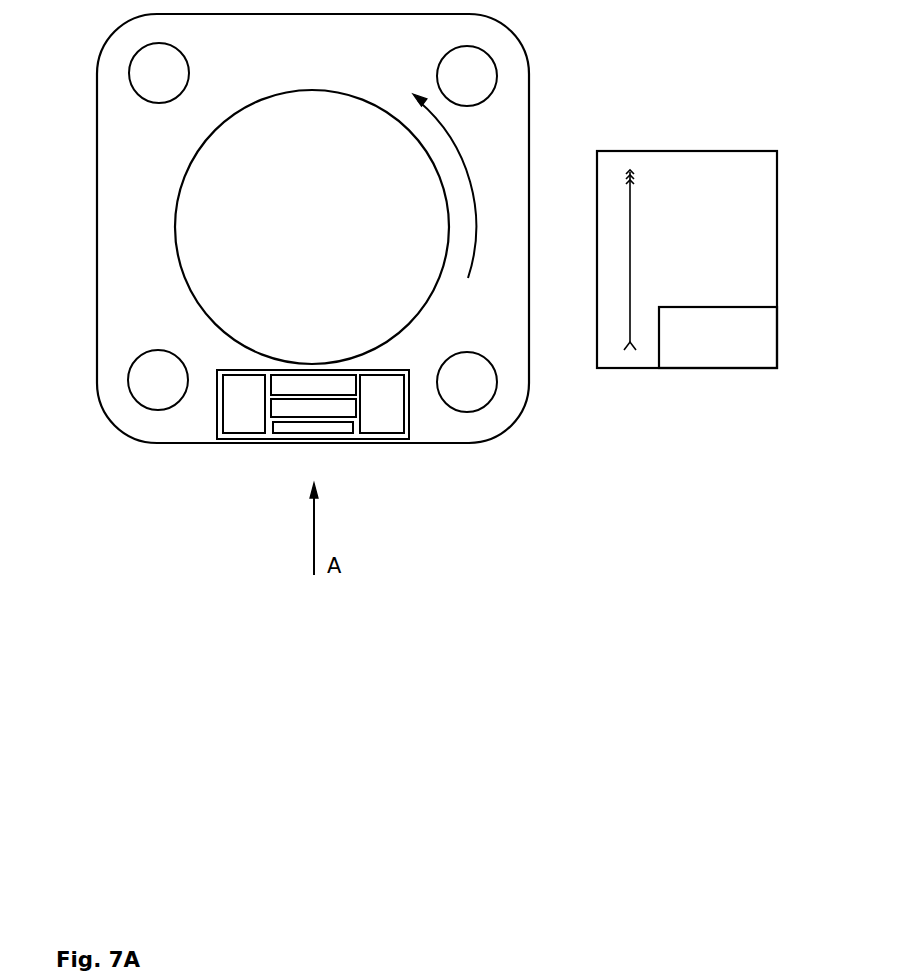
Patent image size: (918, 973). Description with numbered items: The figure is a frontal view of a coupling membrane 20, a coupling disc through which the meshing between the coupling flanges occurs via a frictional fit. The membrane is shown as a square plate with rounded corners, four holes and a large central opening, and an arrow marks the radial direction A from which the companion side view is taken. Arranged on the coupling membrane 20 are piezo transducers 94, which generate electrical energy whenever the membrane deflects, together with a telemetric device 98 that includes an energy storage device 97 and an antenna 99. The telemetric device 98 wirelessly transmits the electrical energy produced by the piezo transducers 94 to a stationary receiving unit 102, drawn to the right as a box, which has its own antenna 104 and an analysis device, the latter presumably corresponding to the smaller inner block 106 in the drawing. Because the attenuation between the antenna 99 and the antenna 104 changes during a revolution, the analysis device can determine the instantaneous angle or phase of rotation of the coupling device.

The coupling membrane 20 is at (502, 110).
The piezo transducers 94 is at (246, 417).
The energy storage device 97 is at (350, 381).
The telemetric device 98 is at (357, 427).
The antenna 99 is at (290, 427).
The stationary receiving unit 102 is at (729, 170).
The antenna 104 is at (630, 220).
The memory unit 106 is at (729, 355).